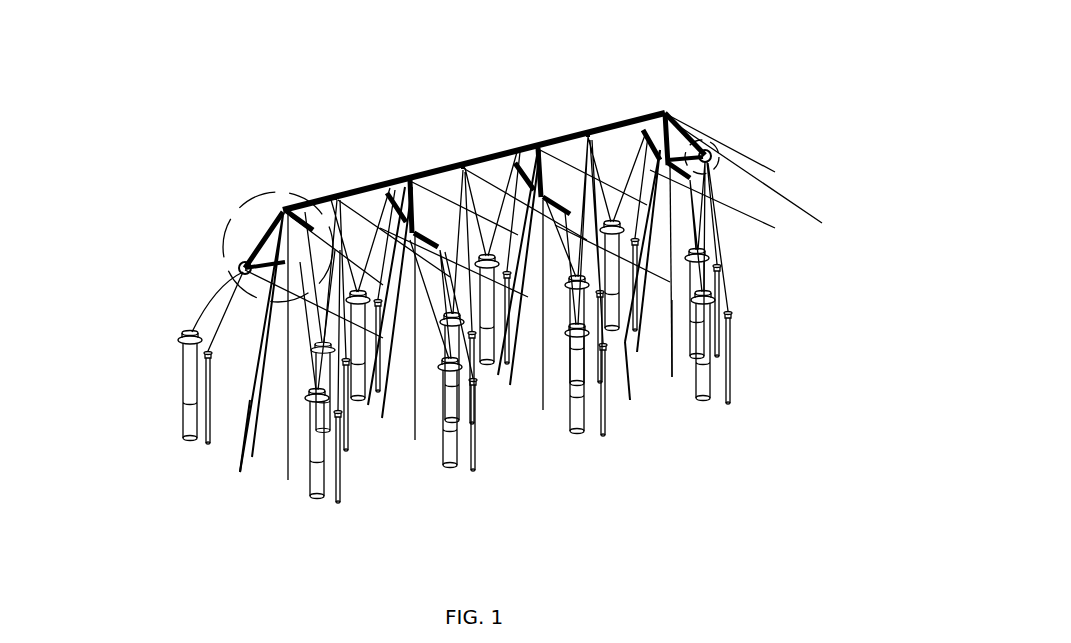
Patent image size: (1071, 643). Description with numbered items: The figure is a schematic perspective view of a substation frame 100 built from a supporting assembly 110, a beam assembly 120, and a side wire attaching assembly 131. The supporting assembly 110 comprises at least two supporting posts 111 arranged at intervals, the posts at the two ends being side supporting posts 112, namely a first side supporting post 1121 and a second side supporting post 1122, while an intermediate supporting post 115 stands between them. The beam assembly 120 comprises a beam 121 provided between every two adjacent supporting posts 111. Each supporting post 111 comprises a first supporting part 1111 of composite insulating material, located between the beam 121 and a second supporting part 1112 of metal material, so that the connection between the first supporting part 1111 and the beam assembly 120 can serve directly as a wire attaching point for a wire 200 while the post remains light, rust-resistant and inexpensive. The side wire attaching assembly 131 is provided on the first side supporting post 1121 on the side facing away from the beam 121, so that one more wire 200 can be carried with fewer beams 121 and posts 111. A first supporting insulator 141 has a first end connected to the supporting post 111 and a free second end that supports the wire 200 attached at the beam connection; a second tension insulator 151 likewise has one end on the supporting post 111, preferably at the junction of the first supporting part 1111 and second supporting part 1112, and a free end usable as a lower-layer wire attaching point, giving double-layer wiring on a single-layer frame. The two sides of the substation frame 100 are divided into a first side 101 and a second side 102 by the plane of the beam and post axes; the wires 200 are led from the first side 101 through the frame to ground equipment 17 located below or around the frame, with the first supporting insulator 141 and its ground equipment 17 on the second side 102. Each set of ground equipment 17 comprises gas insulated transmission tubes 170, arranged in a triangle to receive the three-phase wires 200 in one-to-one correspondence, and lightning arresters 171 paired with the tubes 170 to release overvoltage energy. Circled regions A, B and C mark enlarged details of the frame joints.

The substation frame 100 is at (386, 79).
The first side 101 is at (668, 522).
The second side 102 is at (277, 152).
The supporting assembly 110 is at (645, 440).
The supporting post 111 is at (501, 257).
The side supporting post 112 is at (283, 435).
The intermediate supporting post 115 is at (417, 392).
The first supporting part 1111 is at (688, 135).
The second supporting part 1112 is at (670, 245).
The first side supporting post 1121 is at (655, 362).
The second side supporting post 1122 is at (228, 450).
The beam assembly 120 is at (465, 113).
The beam 121 is at (370, 186).
The side wire attaching assembly 131 is at (243, 263).
The first supporting insulator 141 is at (515, 163).
The second tension insulator 151 is at (427, 232).
The ground equipment 17 is at (455, 405).
The gas insulated transmission tube 170 is at (470, 440).
The lightning arrester 171 is at (573, 413).
The wire 200 is at (800, 210).
The detail A is at (232, 212).
The detail B is at (645, 125).
The detail C is at (713, 148).